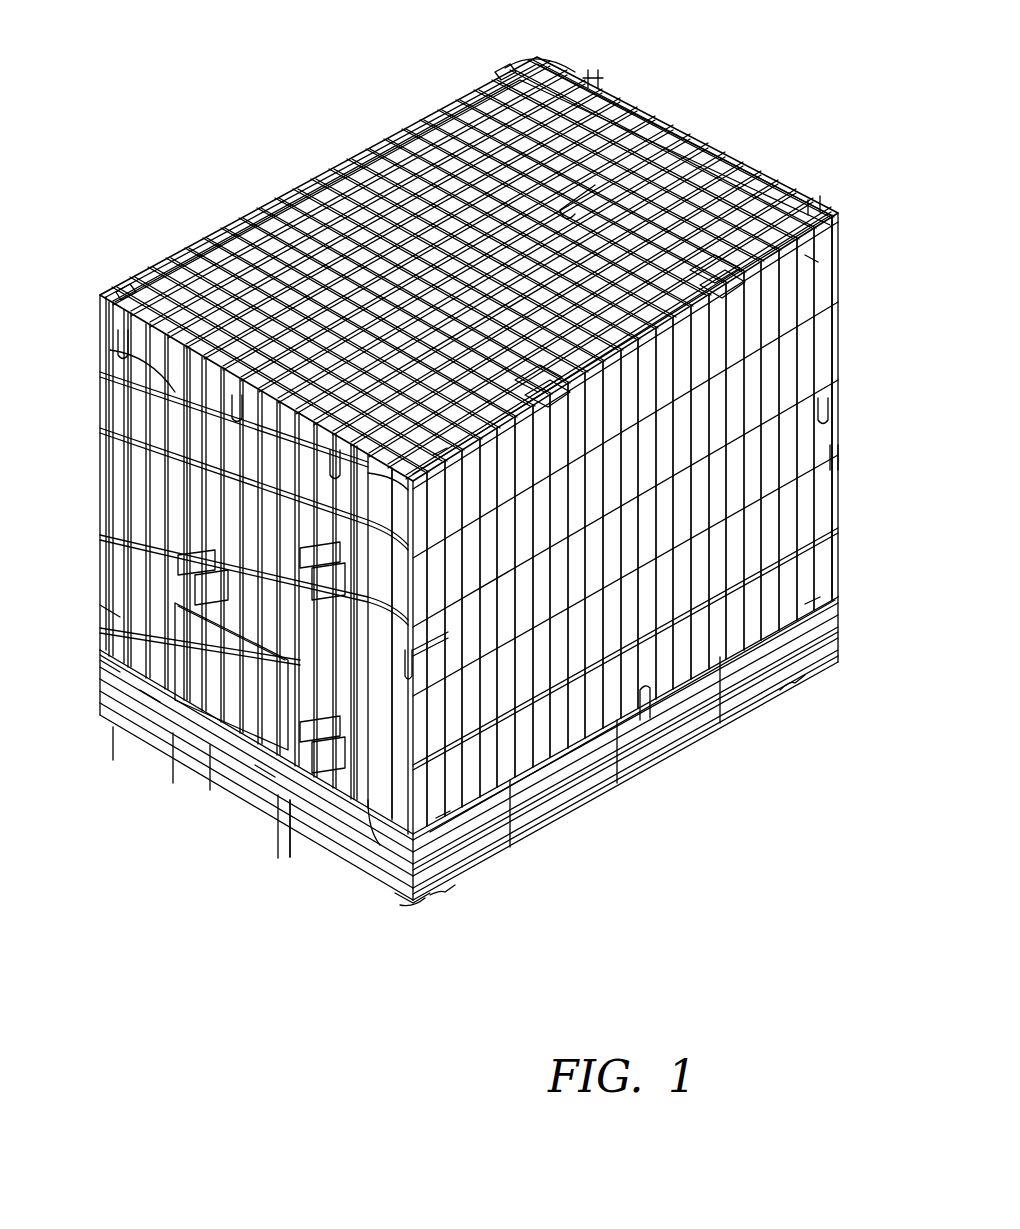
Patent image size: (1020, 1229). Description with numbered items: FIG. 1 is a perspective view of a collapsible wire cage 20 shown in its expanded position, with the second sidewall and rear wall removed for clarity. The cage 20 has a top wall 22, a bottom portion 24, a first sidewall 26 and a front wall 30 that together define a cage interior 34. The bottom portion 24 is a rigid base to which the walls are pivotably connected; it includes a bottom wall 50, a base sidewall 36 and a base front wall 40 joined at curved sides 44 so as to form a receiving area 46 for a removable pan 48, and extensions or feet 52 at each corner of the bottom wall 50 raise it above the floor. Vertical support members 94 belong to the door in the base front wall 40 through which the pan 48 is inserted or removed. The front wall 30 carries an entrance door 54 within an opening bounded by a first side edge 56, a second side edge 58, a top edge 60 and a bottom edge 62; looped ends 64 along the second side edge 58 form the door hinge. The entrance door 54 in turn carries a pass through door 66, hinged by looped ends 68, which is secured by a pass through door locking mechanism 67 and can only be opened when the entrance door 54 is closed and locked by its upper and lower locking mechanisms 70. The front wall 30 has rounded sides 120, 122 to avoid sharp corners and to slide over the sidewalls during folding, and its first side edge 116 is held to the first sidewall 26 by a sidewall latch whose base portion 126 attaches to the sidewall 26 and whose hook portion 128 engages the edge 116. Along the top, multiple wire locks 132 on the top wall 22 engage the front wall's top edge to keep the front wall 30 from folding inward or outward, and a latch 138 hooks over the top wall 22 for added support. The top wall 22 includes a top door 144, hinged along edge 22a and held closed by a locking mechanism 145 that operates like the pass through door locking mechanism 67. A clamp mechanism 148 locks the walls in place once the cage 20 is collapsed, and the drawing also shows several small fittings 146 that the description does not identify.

The collapsible cage 20 is at (255, 183).
The top wall 22 is at (702, 173).
The edge of top wall 22a is at (343, 168).
The bottom portion 24 is at (765, 722).
The first sidewall 26 is at (537, 713).
The front wall 30 is at (130, 640).
The cage interior 34 is at (155, 440).
The base sidewall 36 is at (640, 747).
The base front wall 40 is at (165, 530).
The curved sides 44 is at (100, 705).
The receiving area 46 is at (610, 768).
The removable pan 48 is at (403, 897).
The bottom wall 50 is at (488, 840).
The extensions or feet 52 is at (793, 675).
The entrance door 54 is at (180, 470).
The first side edge 56 is at (373, 847).
The second side edge 58 is at (105, 668).
The top edge 60 is at (168, 385).
The bottom edge 62 is at (220, 750).
The looped ends 64 is at (125, 385).
The pass through door 66 is at (217, 675).
The pass through door locking mechanism 67 is at (212, 560).
The looped ends 68 is at (265, 775).
The locking mechanism 70 is at (303, 548).
The vertical support members 94 is at (280, 833).
The first side edge 116 is at (422, 737).
The rounded side 120 is at (383, 797).
The rounded side 122 is at (110, 620).
The base portion 126 is at (838, 458).
The hook portion 128 is at (830, 405).
The wire lock 132 is at (598, 78).
The latch 138 is at (240, 400).
The top door 144 is at (580, 215).
The locking mechanism 145 is at (702, 255).
The sleeve 146 is at (500, 75).
The clamp mechanism 148 is at (653, 703).